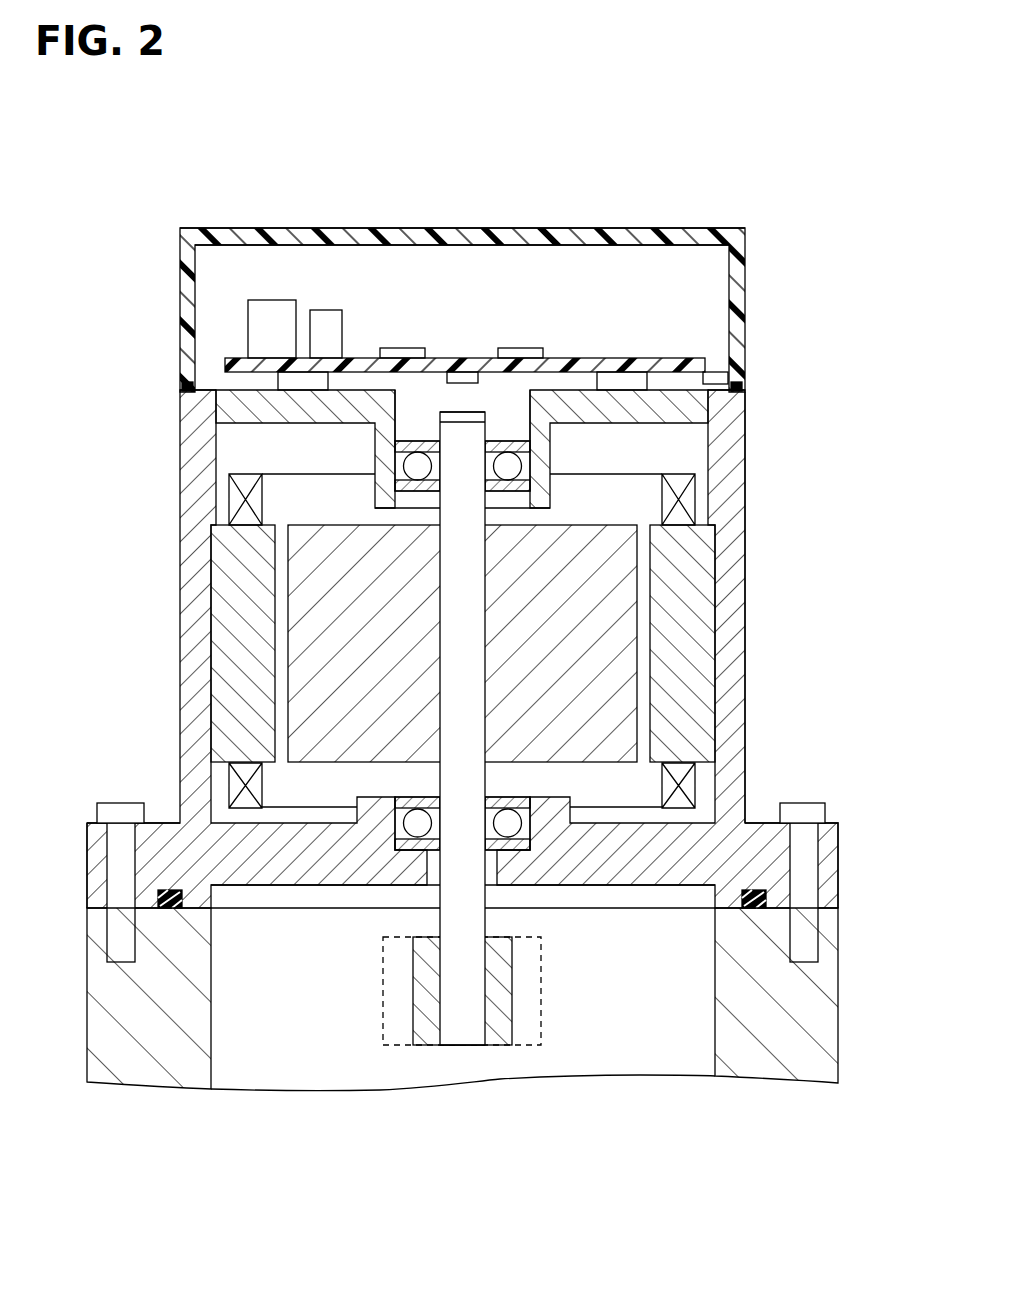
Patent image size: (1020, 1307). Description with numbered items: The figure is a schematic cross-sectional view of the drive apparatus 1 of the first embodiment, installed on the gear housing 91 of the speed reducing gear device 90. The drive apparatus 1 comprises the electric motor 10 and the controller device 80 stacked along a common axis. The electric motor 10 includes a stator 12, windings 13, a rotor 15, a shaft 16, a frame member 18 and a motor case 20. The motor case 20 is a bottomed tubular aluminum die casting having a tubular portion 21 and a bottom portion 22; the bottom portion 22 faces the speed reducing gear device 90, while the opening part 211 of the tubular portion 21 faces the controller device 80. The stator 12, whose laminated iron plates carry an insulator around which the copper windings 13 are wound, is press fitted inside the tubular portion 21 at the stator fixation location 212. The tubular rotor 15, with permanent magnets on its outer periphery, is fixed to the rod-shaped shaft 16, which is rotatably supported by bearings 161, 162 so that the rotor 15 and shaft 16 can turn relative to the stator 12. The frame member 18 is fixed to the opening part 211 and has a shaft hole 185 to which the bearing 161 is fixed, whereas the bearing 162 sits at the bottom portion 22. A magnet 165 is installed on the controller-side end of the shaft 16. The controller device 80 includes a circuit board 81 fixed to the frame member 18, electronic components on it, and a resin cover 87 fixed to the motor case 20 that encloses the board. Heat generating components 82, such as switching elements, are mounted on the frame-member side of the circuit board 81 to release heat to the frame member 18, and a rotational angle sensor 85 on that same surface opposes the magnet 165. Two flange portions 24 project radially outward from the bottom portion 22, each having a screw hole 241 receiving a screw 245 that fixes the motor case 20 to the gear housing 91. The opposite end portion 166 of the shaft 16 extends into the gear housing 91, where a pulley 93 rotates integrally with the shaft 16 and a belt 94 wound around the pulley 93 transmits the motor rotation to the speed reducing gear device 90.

The drive apparatus 1 is at (715, 183).
The electric motor 10 is at (464, 673).
The stator 12 is at (220, 594).
The windings 13 is at (240, 500).
The rotor 15 is at (320, 650).
The shaft 16 is at (485, 677).
The frame member 18 is at (411, 326).
The motor case 20 is at (465, 656).
The tubular portion 21 is at (745, 645).
The bottom portion 22 is at (290, 880).
The flange portions 24 is at (95, 853).
The controller device 80 is at (513, 271).
The circuit board 81 is at (226, 365).
The heat generating components 82 is at (285, 388).
The rotational angle sensor 85 is at (458, 372).
The cover 87 is at (218, 235).
The speed reducing gear device 90 is at (508, 999).
The gear housing 91 is at (822, 1062).
The pulley 93 is at (428, 1045).
The belt 94 is at (388, 1045).
The bearing 161 is at (400, 453).
The bearing 162 is at (360, 805).
The magnet 165 is at (480, 412).
The end portion 166 is at (462, 1045).
The shaft hole 185 is at (404, 415).
The opening part 211 is at (712, 391).
The stator fixation location 212 is at (745, 688).
The screw hole 241 is at (115, 884).
The screw 245 is at (108, 810).